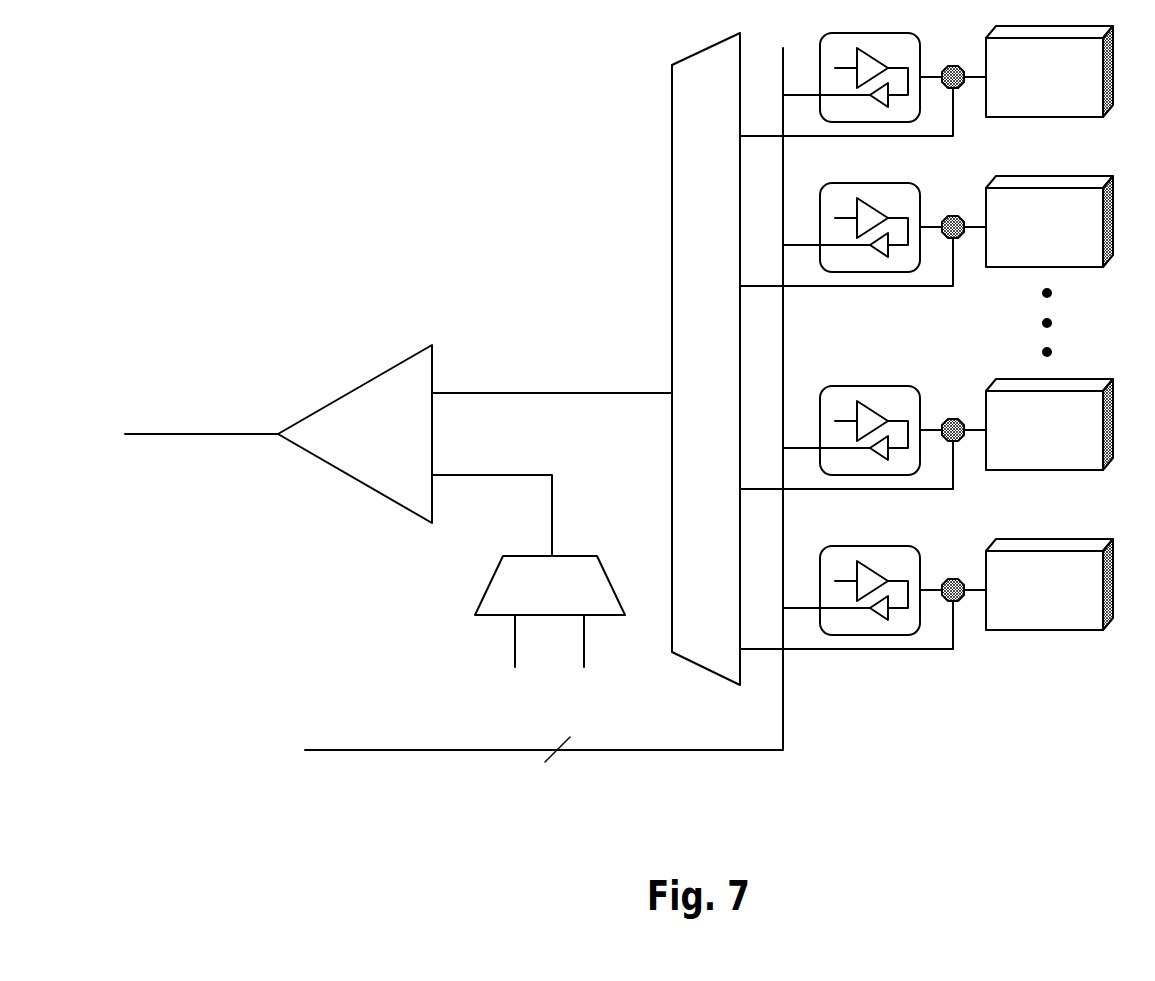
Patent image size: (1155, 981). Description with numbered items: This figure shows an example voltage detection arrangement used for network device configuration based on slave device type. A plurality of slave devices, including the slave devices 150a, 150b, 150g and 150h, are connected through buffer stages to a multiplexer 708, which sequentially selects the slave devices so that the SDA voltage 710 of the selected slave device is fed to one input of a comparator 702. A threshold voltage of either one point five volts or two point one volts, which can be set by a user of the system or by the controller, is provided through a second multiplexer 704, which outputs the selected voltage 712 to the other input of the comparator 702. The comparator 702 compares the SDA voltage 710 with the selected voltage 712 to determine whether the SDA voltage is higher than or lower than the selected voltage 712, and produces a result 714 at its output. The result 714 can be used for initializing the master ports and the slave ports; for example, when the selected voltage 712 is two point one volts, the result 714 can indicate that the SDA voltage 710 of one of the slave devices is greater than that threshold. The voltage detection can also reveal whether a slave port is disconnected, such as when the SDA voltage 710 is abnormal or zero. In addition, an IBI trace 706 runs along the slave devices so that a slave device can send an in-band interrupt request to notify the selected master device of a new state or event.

The comparator 702 is at (357, 387).
The multiplexer 704 is at (485, 585).
The IBI trace 706 is at (407, 750).
The multiplexer 708 is at (672, 200).
The SDA voltage 710 is at (575, 393).
The selected voltage 712 is at (525, 475).
The result 714 is at (230, 434).
The slave device 150a is at (1015, 89).
The slave device 150b is at (1015, 239).
The slave device 150g is at (1015, 442).
The slave device 150h is at (1015, 602).